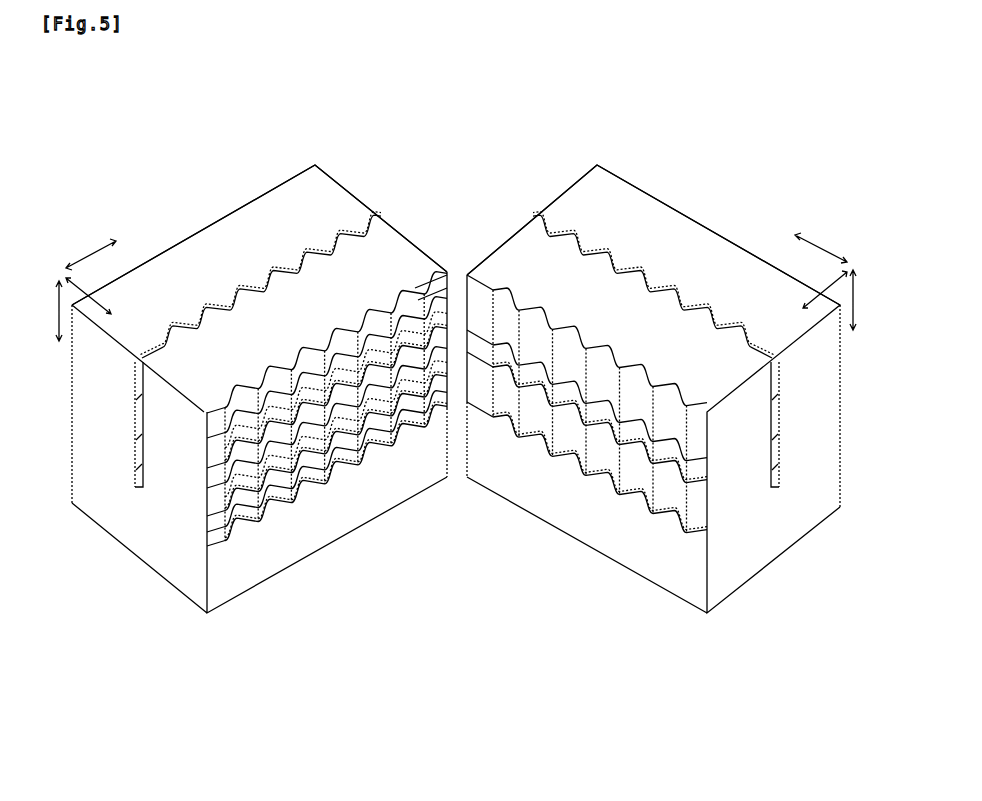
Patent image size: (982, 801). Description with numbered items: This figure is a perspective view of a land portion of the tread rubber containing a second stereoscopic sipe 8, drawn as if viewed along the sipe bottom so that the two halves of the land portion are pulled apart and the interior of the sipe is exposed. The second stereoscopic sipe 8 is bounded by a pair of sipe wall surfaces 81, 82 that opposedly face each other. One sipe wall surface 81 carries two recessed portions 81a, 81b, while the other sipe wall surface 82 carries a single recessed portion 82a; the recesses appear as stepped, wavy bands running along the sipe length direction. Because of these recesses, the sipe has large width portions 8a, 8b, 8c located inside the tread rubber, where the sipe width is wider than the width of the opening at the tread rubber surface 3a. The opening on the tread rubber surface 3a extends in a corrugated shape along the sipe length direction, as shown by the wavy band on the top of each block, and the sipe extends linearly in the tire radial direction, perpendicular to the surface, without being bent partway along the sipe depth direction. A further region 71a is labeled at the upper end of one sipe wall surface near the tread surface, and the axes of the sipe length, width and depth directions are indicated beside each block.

The top surface of core 3a is at (296, 194).
The second stereoscopic sipe 8 is at (258, 289).
The large width portion 8a is at (132, 402).
The large width portion 8b is at (150, 420).
The large width portion 8c is at (134, 450).
The top plate 71a is at (434, 300).
The sipe wall surface 81 is at (220, 531).
The recessed portion 81a is at (205, 460).
The recessed portion 81b is at (205, 513).
The sipe wall surface 82 is at (699, 525).
The recessed portion 82a is at (720, 476).